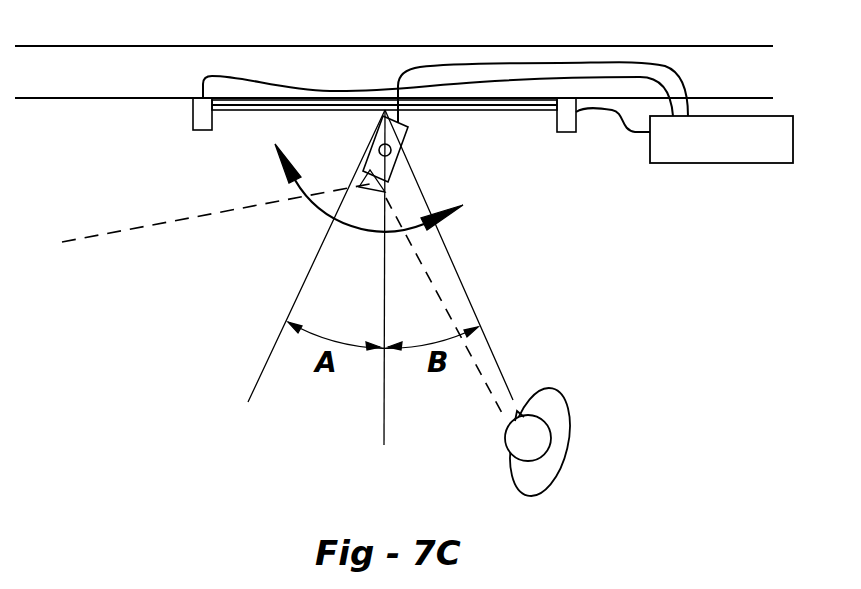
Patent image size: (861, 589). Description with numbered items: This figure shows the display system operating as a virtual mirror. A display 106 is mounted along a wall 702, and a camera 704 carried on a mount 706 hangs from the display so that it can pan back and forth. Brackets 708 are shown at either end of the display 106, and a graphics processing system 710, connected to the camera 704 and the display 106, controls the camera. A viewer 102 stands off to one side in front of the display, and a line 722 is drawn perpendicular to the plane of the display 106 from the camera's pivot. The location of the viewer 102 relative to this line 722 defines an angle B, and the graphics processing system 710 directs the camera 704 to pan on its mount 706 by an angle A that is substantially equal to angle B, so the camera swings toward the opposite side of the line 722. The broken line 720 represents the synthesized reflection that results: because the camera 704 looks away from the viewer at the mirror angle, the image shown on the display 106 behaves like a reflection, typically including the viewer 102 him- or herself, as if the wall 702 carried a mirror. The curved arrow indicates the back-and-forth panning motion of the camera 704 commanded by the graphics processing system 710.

The wall 702 is at (394, 72).
The display 106 is at (511, 112).
The mounting brackets 708 is at (205, 121).
The graphics processing system 710 is at (721, 139).
The camera 704 is at (408, 132).
The mount 706 is at (380, 148).
The line perpendicular to the plane of display 722 is at (386, 296).
The synthesized reflection 720 is at (183, 221).
The viewer 102 is at (567, 442).